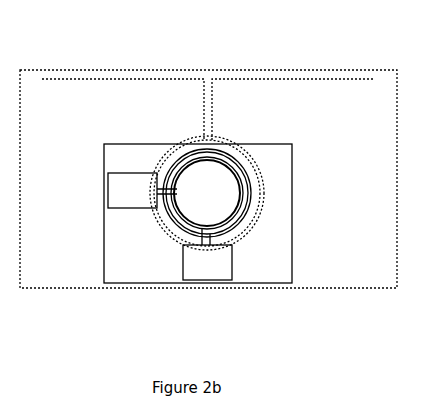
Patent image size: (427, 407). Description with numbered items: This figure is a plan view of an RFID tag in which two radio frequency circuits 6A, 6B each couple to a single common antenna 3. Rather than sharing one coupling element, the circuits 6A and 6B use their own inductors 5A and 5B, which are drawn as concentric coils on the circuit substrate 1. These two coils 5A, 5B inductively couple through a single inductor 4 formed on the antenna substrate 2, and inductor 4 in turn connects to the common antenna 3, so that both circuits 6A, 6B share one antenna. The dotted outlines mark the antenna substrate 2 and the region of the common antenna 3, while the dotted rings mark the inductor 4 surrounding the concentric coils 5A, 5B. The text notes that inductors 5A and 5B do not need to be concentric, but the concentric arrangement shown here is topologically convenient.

The housing 1 is at (99, 263).
The antenna substrate 2 is at (300, 62).
The common antenna 3 is at (110, 71).
The inductor 4 is at (159, 149).
The inductor 5A is at (234, 150).
The inductor 5B is at (197, 145).
The circuit 6A is at (99, 187).
The circuit 6B is at (206, 291).